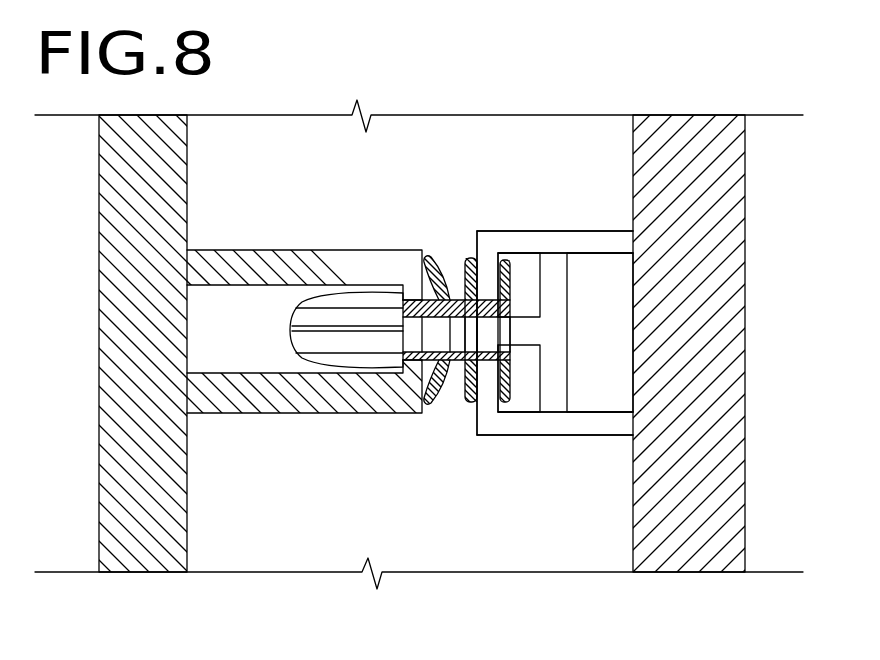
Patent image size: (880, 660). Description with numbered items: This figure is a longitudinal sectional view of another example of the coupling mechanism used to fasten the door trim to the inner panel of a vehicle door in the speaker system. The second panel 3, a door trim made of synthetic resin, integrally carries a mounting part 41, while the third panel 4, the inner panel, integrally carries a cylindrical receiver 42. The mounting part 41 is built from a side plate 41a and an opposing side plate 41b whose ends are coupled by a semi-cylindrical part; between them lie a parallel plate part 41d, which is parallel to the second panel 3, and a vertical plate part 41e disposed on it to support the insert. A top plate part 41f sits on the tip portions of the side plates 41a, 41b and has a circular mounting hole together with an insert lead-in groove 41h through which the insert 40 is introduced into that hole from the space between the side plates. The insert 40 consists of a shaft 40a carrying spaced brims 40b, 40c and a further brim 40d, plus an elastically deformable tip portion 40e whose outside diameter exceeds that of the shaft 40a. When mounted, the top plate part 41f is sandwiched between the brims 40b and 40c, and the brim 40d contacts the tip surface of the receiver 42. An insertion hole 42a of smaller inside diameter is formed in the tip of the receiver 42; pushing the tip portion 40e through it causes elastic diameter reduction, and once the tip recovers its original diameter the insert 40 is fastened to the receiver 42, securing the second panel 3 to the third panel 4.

The second panel 3 is at (747, 216).
The third panel 4 is at (122, 168).
The insert 40 is at (288, 342).
The shaft 40a is at (450, 362).
The brim 40b is at (513, 298).
The brim 40c is at (466, 260).
The brim 40d is at (378, 258).
The tip portion 40e is at (335, 360).
The mounting part 41 is at (542, 452).
The side plate 41a is at (598, 437).
The side plate 41b is at (585, 247).
The parallel plate part 41d is at (560, 378).
The vertical plate part 41e is at (517, 332).
The top plate part 41f is at (488, 402).
The insert lead-in groove 41h is at (492, 355).
The receiver 42 is at (252, 268).
The insertion hole 42a is at (388, 400).